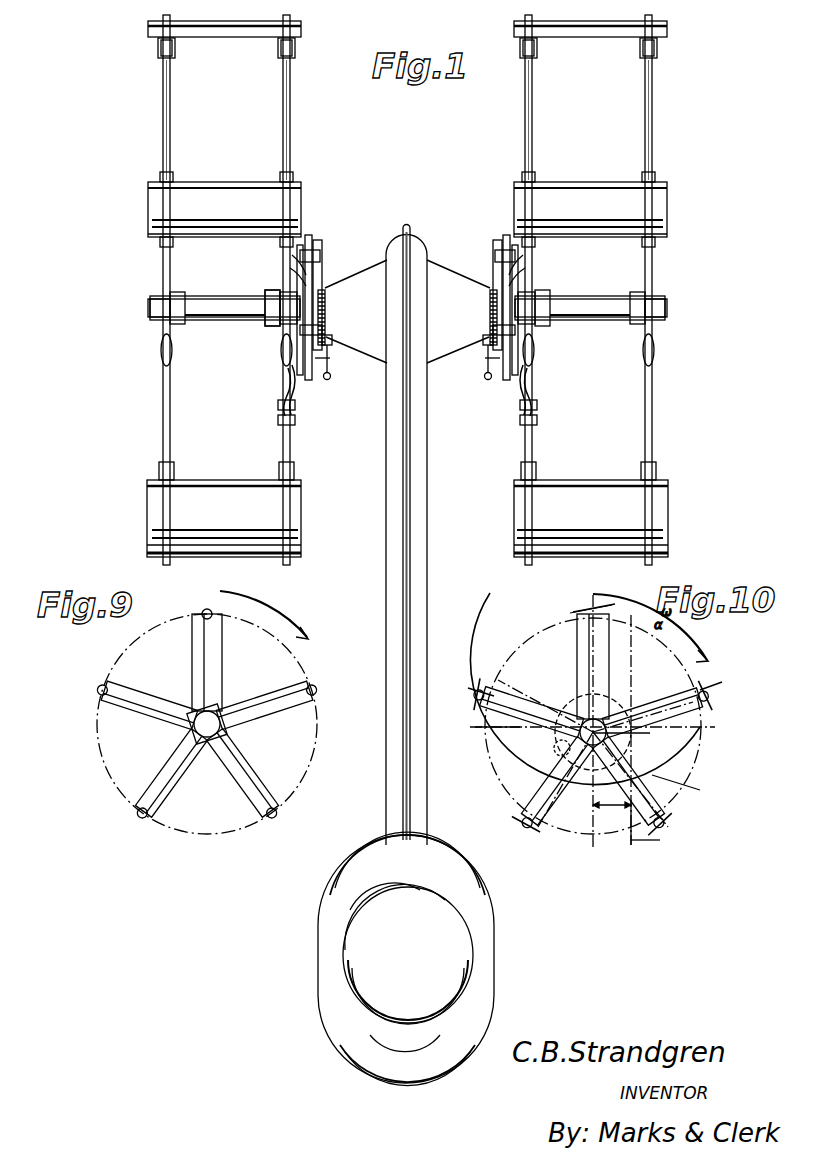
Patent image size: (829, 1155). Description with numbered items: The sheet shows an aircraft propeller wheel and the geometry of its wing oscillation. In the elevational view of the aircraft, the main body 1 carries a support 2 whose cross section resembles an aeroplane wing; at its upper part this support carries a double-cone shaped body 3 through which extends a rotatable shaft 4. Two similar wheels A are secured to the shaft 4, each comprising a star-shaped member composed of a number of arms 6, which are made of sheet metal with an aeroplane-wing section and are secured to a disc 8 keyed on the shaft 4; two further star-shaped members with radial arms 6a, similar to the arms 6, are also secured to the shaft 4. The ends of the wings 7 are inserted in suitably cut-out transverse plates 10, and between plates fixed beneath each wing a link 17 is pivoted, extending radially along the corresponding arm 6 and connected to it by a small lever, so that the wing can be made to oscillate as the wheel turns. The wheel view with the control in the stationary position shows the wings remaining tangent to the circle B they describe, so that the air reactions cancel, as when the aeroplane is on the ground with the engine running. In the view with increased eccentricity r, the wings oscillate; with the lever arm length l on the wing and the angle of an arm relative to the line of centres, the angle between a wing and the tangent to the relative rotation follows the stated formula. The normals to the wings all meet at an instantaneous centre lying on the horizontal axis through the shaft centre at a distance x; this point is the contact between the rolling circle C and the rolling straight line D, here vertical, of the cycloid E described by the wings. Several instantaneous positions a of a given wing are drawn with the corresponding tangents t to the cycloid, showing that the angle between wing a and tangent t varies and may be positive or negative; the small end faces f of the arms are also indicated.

In FIG. 1, the main body 1 is at (332, 982).
In FIG. 1, the support 2 is at (407, 215).
In FIG. 1, the double-cone shaped body 3 is at (344, 300).
In FIG. 1, the shaft 4 is at (225, 306).
In FIG. 1, the arms 6 is at (283, 386).
In FIG. 1, the radial arms 6a is at (165, 442).
In FIG. 1, the wings 7 is at (210, 197).
In FIG. 1, the disc 8 is at (270, 299).
In FIG. 1, the transverse plates 10 is at (287, 30).
In FIG. 1, the link 17 is at (292, 397).
In FIG. 1, the wheels A is at (402, 261).
In FIG. 9, the circle B is at (308, 759).
In FIG. 10, the circle B is at (490, 780).
In FIG. 10, the rolling circle C is at (565, 707).
In FIG. 10, the rolling straight line D is at (645, 827).
In FIG. 10, the cycloid E is at (490, 645).
In FIG. 10, the instantaneous positions of a wing a is at (597, 737).
In FIG. 10, the tangents to the cycloid t is at (582, 757).
In FIG. 10, the eccentricity r is at (652, 735).
In FIG. 10, the distance X x is at (612, 796).
In FIG. 10, the length of the lever arm on the wing l is at (591, 601).
In FIG. 10, the spoke end faces f is at (596, 676).